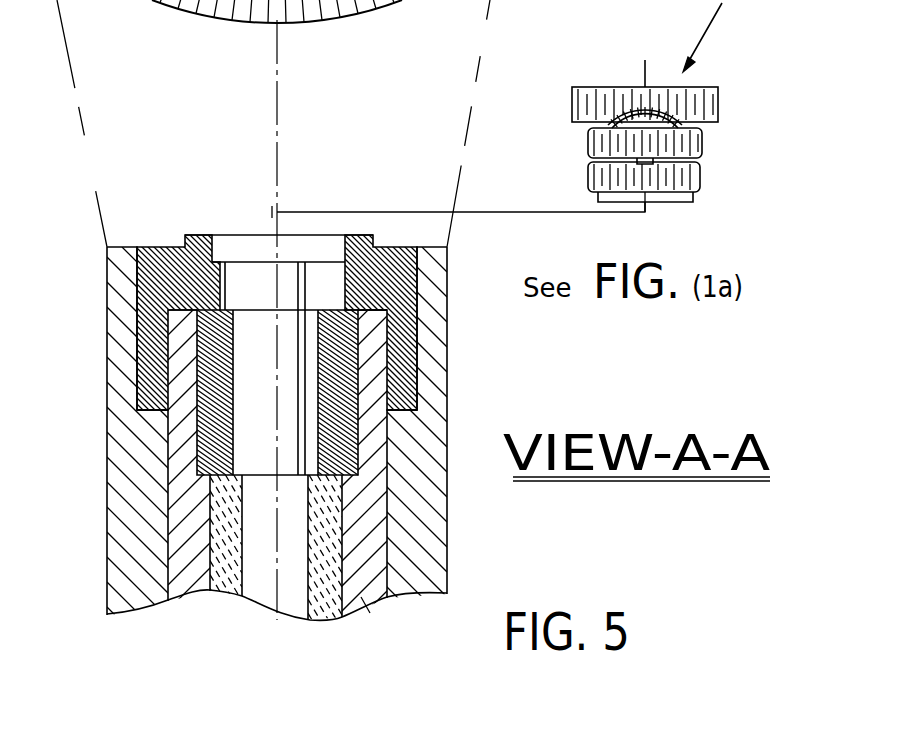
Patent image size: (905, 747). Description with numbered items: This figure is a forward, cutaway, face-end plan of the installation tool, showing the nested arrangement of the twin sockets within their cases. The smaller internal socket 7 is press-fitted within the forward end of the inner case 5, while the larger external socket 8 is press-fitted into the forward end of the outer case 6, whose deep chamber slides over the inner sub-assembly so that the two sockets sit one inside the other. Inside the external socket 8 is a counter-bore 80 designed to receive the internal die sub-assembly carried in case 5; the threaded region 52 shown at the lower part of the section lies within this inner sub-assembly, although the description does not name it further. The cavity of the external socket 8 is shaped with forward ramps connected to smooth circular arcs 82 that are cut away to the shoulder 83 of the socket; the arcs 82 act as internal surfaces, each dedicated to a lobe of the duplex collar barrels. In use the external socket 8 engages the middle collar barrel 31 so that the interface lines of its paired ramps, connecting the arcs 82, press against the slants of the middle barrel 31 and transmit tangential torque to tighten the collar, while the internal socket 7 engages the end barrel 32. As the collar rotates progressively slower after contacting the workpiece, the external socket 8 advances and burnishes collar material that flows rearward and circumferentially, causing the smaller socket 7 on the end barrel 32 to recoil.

The case 5 is at (193, 581).
The case 6 is at (128, 450).
The internal socket 7 is at (237, 391).
The external socket 8 is at (137, 281).
The middle collar barrel 31 is at (590, 143).
The end barrel 32 is at (650, 183).
The threaded portion 52 is at (210, 593).
The counter-bore 80 is at (390, 412).
The circular arcs 82 is at (300, 262).
The shoulder 83 is at (270, 273).